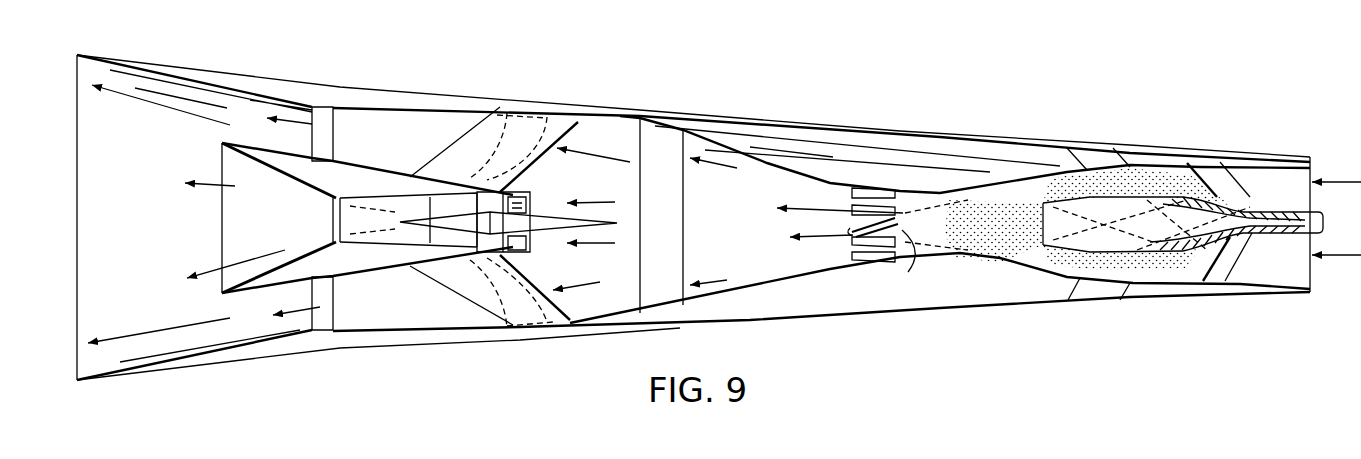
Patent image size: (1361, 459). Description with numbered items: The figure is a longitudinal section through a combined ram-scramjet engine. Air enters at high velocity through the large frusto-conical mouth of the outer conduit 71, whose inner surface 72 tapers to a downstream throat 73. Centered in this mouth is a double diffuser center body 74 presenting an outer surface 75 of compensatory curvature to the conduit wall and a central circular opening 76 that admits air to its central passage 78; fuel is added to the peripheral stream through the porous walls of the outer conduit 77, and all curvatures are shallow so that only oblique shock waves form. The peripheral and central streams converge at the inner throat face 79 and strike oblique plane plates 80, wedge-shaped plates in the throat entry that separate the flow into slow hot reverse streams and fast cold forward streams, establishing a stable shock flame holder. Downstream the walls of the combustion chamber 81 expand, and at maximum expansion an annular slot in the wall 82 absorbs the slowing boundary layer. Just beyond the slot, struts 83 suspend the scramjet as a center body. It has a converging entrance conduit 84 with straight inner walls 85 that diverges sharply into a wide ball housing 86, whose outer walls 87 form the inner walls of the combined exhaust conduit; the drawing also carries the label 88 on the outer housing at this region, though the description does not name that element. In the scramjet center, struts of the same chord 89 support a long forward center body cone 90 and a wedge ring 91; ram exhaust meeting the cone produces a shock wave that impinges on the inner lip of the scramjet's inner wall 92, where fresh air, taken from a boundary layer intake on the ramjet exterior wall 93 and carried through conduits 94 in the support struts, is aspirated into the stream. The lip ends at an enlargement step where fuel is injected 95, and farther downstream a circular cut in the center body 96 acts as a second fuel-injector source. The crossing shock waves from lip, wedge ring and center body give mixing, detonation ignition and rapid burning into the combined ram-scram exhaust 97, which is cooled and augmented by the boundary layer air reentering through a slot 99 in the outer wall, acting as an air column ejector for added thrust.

The outer conduit 71 is at (1297, 178).
The inner surface of outer conduit 72 is at (1020, 197).
The downstream throat 73 is at (910, 272).
The double diffuser center body 74 is at (1153, 237).
The outer surface of center body 75 is at (1243, 197).
The central circular opening 76 is at (1297, 225).
The porous walls of outer conduit 77 is at (1107, 183).
The central passage 78 is at (1180, 258).
The inner throat face 79 is at (974, 231).
The oblique plane plates 80 is at (867, 210).
The combustion chamber walls 81 is at (767, 166).
The annular slot in wall 82 is at (665, 128).
The struts 83 is at (467, 132).
The converging entrance conduit 84 is at (600, 201).
The straight inner walls 85 is at (427, 163).
The wide ball housing 86 is at (233, 167).
The outer walls of ball housing 87 is at (377, 172).
The outer housing 88 is at (108, 250).
The struts of chord 89 is at (425, 246).
The forward circular center body cone 90 is at (552, 232).
The wedge ring 91 is at (525, 252).
The inner lip of scramjet inner wall 92 is at (533, 203).
The ramjet exterior wall 93 is at (677, 323).
The conduits in support struts 94 is at (507, 112).
The fuel injection step 95 is at (507, 192).
The circular cut in center body 96 is at (487, 234).
The combined ram-scram exhaust 97 is at (137, 218).
The slot in outer wall 99 is at (327, 133).